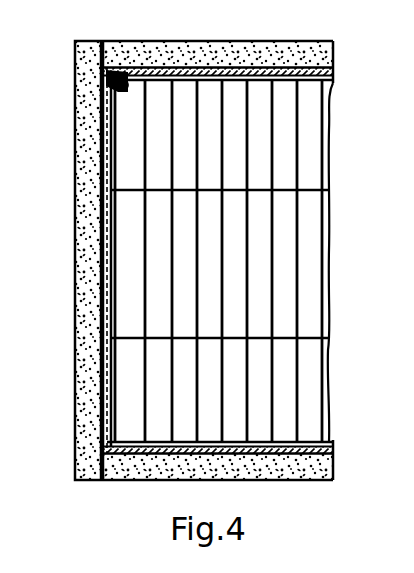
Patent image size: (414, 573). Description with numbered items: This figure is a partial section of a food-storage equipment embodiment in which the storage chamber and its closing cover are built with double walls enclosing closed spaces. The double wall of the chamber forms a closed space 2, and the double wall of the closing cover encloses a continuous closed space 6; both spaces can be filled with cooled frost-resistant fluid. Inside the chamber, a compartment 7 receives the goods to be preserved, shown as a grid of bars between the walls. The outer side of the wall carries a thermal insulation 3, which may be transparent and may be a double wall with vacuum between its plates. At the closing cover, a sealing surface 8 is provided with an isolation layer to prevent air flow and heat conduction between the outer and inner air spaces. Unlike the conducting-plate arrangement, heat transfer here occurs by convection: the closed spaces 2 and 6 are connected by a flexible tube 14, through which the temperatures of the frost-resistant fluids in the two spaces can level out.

The closed space 2 is at (284, 63).
The thermal insulation 3 is at (76, 105).
The continuous closed space 6 is at (101, 40).
The compartment 7 is at (275, 113).
The sealing surface 8 is at (101, 481).
The flexible tube 14 is at (126, 90).